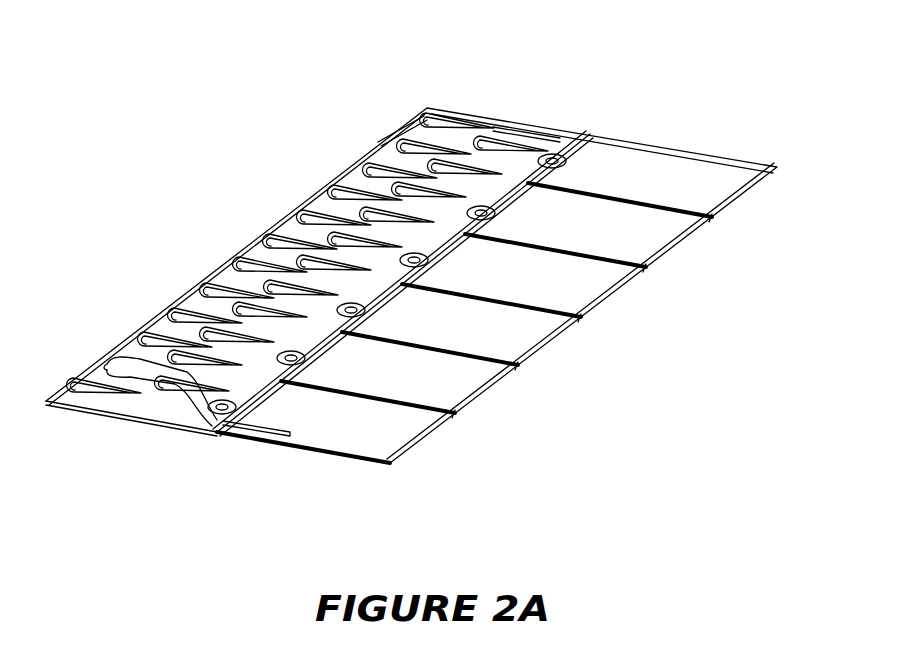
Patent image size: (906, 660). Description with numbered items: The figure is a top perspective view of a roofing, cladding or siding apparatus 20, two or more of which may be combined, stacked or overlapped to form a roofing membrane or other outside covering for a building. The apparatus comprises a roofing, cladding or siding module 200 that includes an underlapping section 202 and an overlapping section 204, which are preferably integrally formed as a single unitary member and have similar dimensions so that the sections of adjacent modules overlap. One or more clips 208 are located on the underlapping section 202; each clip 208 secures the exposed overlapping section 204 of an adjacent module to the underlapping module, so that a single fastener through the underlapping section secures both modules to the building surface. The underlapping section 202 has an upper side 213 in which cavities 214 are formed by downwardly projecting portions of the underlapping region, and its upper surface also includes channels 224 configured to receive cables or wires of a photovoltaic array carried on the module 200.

The roofing, cladding or siding apparatus 20 is at (623, 88).
The roofing, cladding or siding module 200 is at (687, 167).
The underlapping section 202 is at (213, 432).
The overlapping section 204 is at (392, 466).
The clip 208 is at (565, 158).
The upper side 213 is at (229, 275).
The cavity 214 is at (347, 188).
The channel 224 is at (400, 133).